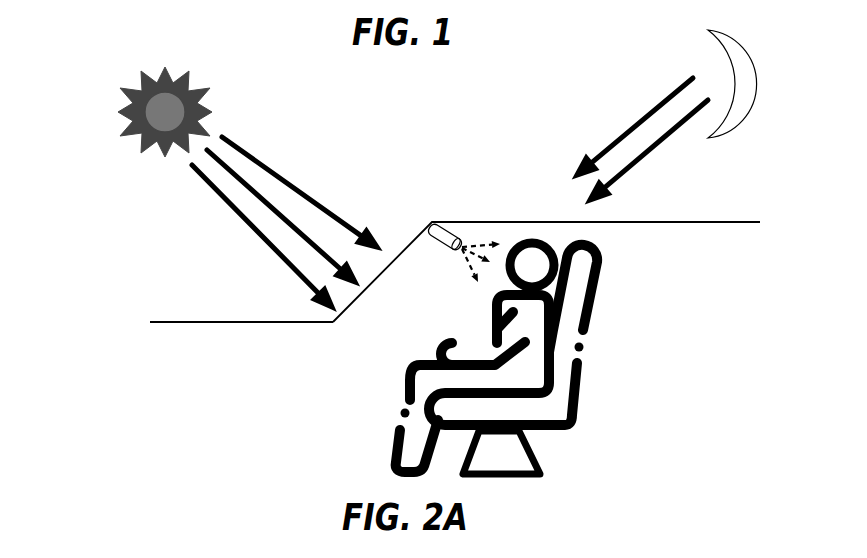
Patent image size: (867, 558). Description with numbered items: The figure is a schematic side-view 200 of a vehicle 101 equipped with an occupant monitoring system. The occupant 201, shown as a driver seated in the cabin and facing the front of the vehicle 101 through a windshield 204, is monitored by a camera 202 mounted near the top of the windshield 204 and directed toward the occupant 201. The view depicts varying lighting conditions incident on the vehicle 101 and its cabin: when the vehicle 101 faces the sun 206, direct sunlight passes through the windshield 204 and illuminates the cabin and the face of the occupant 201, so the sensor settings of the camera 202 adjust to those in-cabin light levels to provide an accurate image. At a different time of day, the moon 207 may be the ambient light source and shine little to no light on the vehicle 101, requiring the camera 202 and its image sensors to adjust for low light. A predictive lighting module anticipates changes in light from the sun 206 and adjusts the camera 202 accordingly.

The schematic side-view 200 is at (107, 182).
The vehicle 101 is at (208, 315).
The windshield 204 is at (400, 255).
The sun 206 is at (167, 110).
The moon 207 is at (757, 70).
The camera 202 is at (450, 238).
The occupant 201 is at (533, 240).